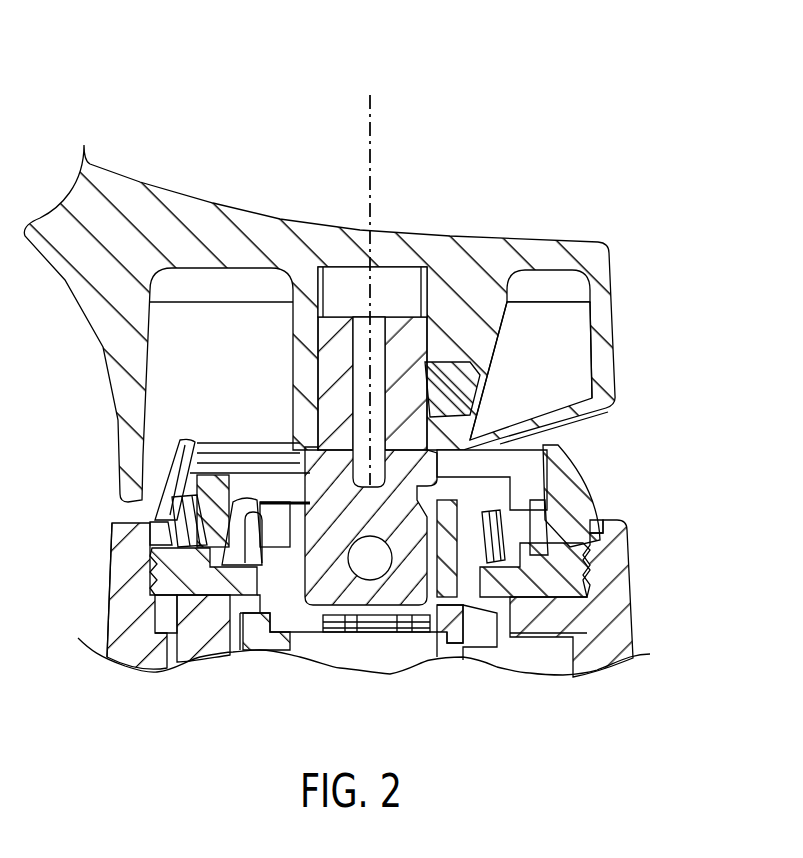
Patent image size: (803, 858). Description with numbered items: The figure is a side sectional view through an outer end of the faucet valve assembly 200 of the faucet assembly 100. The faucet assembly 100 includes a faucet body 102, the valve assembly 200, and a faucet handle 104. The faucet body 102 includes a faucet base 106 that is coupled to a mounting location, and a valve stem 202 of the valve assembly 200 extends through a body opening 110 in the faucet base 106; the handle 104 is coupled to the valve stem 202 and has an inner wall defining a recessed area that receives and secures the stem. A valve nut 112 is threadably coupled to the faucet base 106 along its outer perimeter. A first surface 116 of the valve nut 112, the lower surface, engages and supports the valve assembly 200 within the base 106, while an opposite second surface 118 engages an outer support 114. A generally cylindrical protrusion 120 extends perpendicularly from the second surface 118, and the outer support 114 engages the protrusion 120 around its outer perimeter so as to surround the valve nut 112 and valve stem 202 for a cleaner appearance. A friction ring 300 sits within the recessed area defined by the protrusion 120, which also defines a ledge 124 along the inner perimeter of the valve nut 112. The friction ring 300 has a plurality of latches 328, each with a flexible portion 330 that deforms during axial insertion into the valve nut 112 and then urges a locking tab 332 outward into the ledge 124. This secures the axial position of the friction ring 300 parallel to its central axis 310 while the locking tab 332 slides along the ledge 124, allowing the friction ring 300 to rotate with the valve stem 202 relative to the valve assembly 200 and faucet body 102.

The faucet assembly 100 is at (140, 78).
The faucet body 102 is at (660, 606).
The faucet handle 104 is at (478, 272).
The faucet base 106 is at (102, 632).
The body opening 110 is at (597, 516).
The valve nut 112 is at (207, 582).
The outer support 114 is at (576, 470).
The first surface 116 is at (192, 605).
The second surface 118 is at (160, 538).
The protrusion 120 is at (530, 487).
The ledge 124 is at (562, 560).
The faucet valve assembly 200 is at (283, 430).
The valve stem 202 is at (410, 580).
The friction ring 300 is at (272, 500).
The central axis 310 is at (370, 148).
The latch 328 is at (244, 540).
The flexible portion 330 is at (178, 440).
The locking tab 332 is at (526, 562).